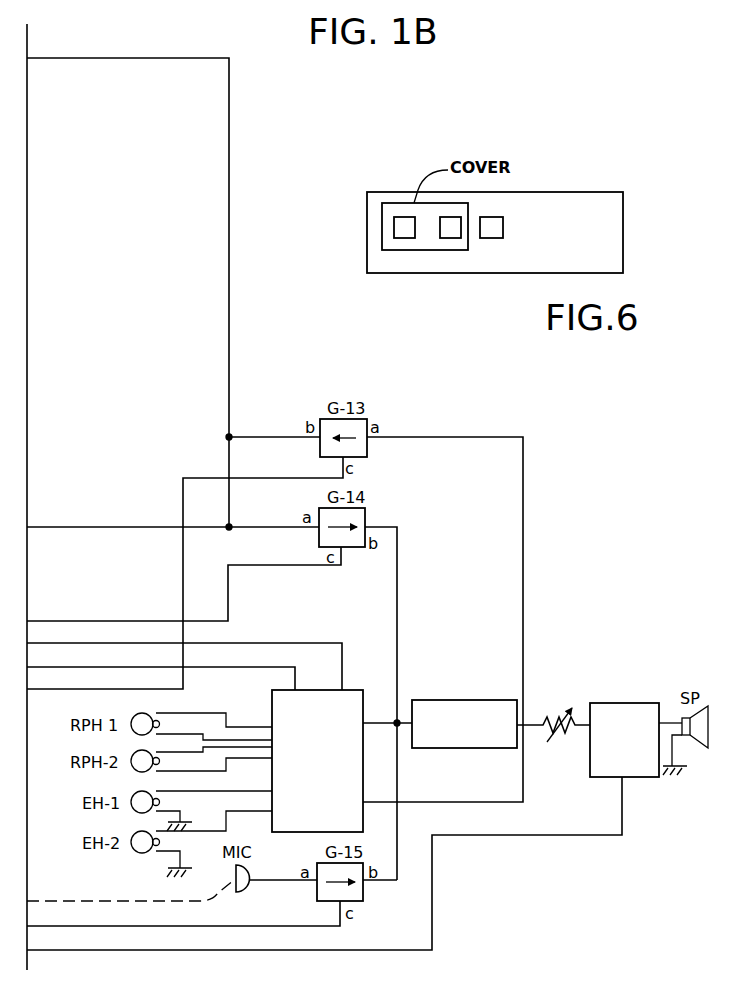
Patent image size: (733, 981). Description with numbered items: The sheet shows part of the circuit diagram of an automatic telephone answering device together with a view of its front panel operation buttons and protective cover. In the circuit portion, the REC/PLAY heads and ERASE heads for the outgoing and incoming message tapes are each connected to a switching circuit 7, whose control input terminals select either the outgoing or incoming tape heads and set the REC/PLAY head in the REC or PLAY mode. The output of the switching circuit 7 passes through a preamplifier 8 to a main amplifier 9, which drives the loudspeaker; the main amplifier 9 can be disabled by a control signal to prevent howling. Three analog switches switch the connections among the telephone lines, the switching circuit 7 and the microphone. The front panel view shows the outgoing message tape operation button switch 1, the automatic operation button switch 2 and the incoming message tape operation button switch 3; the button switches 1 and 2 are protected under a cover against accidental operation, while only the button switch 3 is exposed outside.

In FIG. 6, the outgoing message tape operation button switch 1 is at (405, 238).
In FIG. 6, the automatic operation button switch 2 is at (450, 238).
In FIG. 6, the incoming message tape operation button switch 3 is at (490, 238).
In FIG. 1B, the switching circuit 7 is at (356, 690).
In FIG. 1B, the preamplifier 8 is at (460, 700).
In FIG. 1B, the main amplifier 9 is at (618, 703).